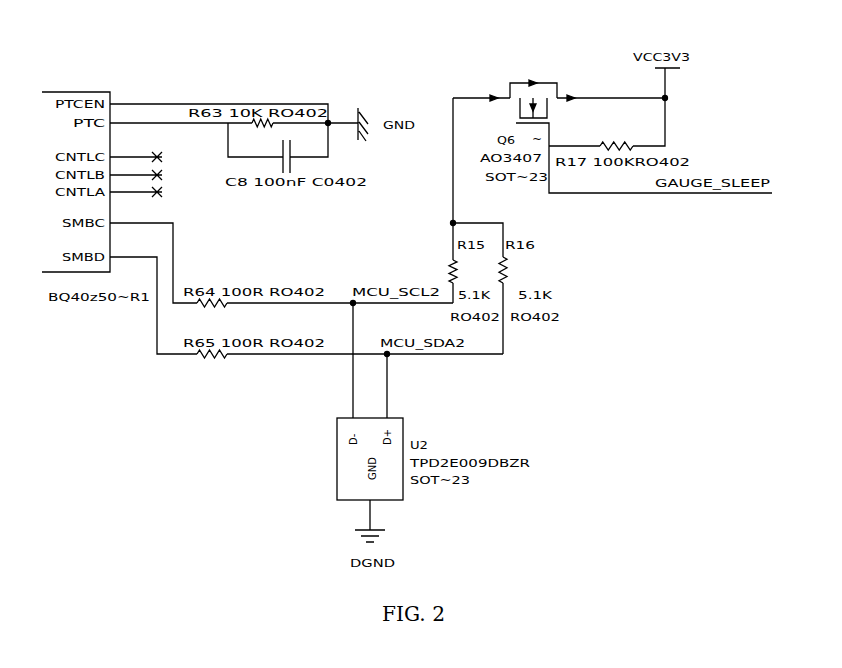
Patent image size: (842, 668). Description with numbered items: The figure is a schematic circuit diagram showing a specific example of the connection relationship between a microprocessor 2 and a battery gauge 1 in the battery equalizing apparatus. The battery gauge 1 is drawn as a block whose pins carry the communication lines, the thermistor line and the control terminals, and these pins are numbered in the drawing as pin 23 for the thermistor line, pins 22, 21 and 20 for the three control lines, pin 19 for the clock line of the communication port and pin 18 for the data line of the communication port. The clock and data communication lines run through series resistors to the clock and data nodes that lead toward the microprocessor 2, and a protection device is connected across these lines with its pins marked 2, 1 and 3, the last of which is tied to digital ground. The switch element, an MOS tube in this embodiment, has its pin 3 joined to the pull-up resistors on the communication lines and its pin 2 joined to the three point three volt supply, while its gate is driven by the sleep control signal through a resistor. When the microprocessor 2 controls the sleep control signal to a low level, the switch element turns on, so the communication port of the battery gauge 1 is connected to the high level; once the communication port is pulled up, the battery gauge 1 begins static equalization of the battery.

The PTC pin of battery gauge BQ40z50 23 is at (234, 119).
The CNTLC pin of battery gauge 22 is at (136, 152).
The CNTLB pin of battery gauge 21 is at (136, 170).
The CNTLA pin of battery gauge 20 is at (136, 187).
The SMBC pin of battery gauge 19 is at (153, 256).
The SMBD pin of battery gauge 18 is at (153, 298).
The pin 3 (transistor Q6 source / U2 ground) 3 is at (431, 310).
The microprocessor 2 is at (501, 248).
The battery gauge 1 is at (379, 386).